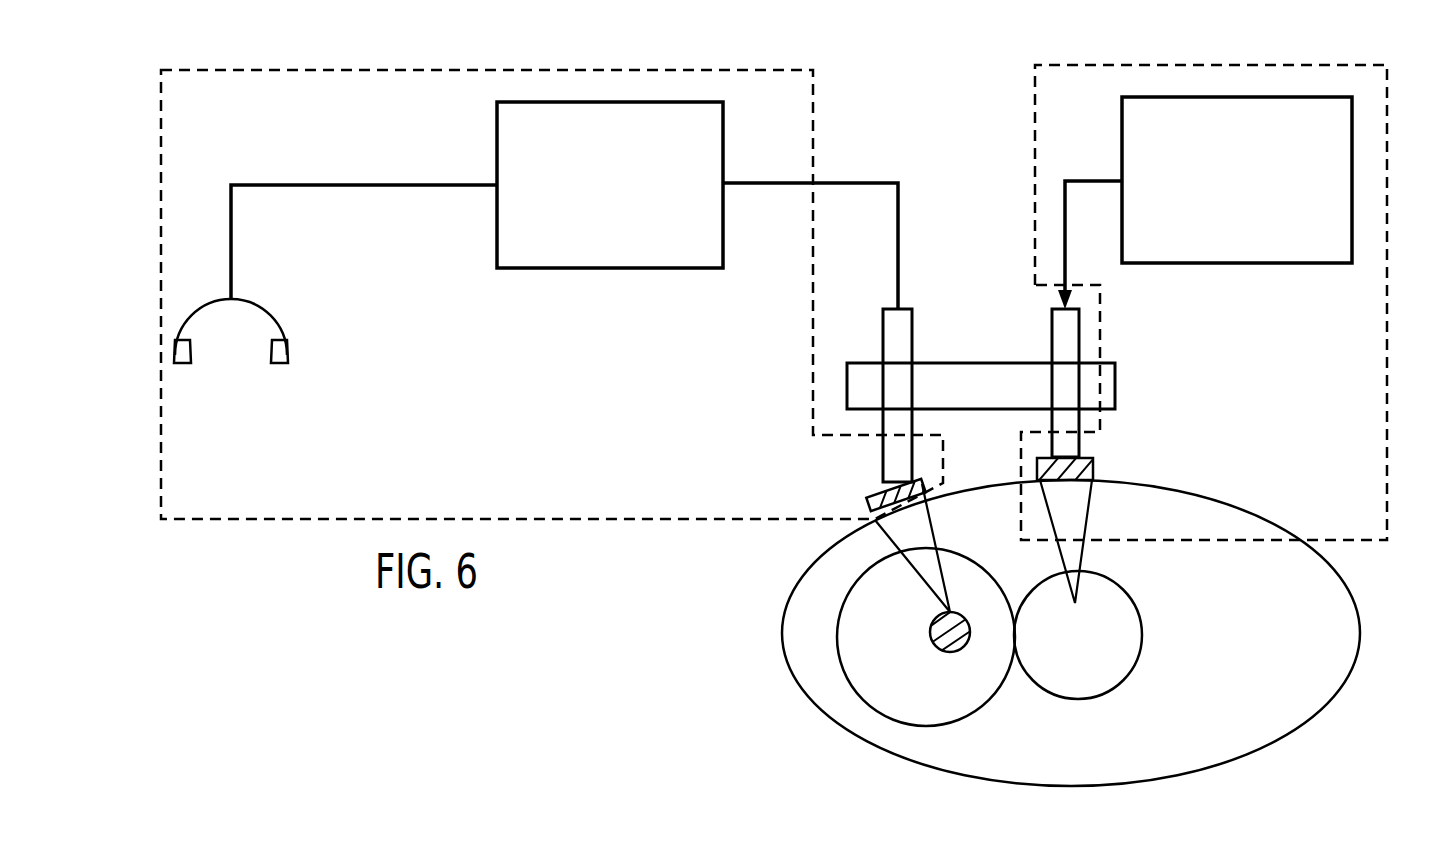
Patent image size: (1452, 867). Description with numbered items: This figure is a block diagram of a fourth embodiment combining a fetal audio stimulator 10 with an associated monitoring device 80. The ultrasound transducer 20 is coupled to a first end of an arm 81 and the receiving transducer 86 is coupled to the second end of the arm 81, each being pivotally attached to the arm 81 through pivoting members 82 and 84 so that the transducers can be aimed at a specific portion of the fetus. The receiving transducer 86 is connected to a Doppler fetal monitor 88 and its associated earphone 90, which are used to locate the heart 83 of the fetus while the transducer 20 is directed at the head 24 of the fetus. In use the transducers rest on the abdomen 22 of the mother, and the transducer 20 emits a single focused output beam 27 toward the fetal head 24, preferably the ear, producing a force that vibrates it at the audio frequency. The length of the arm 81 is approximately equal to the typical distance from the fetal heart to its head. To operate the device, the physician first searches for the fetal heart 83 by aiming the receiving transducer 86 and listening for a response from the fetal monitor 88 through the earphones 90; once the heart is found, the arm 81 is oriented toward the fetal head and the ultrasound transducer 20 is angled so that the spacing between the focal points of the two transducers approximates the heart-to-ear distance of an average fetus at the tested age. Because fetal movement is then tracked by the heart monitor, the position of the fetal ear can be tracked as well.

The fetal audio stimulator 10 is at (1388, 243).
The ultrasound transducer 20 is at (1037, 470).
The abdomen 22 is at (1361, 628).
The head of the fetus 24 is at (1135, 670).
The focused output beam 27 is at (1095, 507).
The monitoring device 80 is at (822, 108).
The arm 81 is at (1116, 388).
The pivoting member 82 is at (882, 343).
The heart of the fetus 83 is at (938, 648).
The pivoting member 84 is at (1080, 325).
The receiving transducer 86 is at (935, 480).
The Doppler fetal monitor 88 is at (723, 222).
The earphone 90 is at (268, 313).